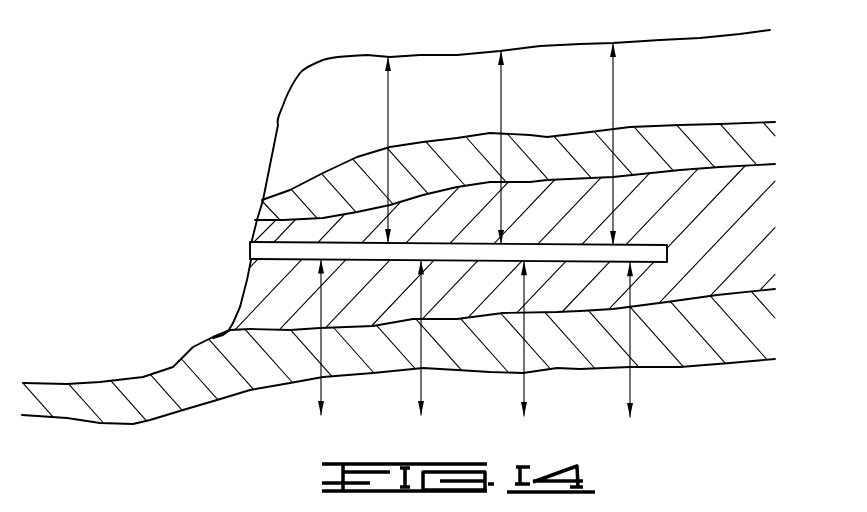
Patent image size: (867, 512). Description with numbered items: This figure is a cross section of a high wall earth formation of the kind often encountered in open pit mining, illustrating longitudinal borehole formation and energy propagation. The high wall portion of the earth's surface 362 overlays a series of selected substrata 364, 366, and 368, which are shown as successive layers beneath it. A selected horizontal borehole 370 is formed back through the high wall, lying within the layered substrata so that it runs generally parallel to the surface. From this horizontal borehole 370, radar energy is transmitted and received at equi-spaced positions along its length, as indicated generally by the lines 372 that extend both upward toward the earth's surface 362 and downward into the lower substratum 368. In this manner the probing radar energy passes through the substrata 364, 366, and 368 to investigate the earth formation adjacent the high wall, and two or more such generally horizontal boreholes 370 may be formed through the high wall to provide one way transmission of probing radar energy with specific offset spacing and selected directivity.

The earth's surface 362 is at (457, 53).
The substratum 364 is at (750, 147).
The substratum 366 is at (753, 231).
The substratum 368 is at (758, 330).
The horizontal borehole 370 is at (251, 244).
The lines of radar energy transmission and reception 372 is at (392, 107).